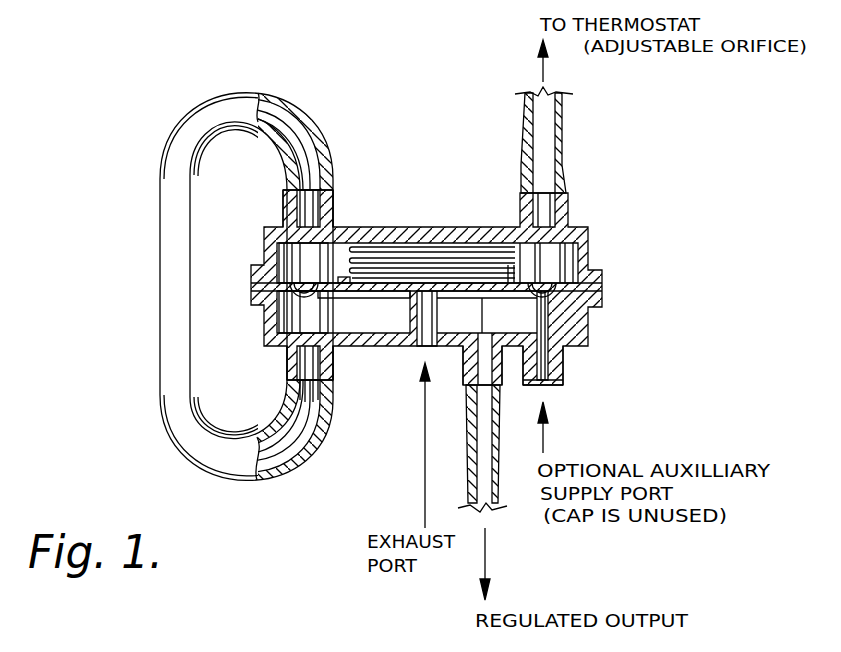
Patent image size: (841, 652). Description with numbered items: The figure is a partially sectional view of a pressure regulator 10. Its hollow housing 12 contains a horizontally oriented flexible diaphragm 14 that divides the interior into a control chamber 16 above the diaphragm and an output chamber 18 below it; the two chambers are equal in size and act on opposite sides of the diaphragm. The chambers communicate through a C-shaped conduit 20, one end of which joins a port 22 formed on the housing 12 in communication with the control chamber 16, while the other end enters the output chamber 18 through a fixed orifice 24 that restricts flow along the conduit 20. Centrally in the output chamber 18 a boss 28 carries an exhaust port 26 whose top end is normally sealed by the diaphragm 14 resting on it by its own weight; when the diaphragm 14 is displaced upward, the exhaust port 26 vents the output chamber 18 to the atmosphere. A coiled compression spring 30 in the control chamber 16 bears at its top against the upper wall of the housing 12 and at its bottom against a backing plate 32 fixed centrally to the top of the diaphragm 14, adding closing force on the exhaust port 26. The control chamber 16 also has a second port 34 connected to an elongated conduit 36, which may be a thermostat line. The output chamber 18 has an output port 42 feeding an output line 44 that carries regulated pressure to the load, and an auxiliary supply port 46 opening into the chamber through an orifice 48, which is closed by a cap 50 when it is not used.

The pressure regulator 10 is at (686, 181).
The housing 12 is at (590, 243).
The flexible diaphragm 14 is at (476, 296).
The control chamber 16 is at (288, 262).
The output chamber 18 is at (334, 318).
The C-shaped conduit 20 is at (172, 356).
The port 22 is at (306, 212).
The fixed orifice 24 is at (302, 352).
The exhaust port 26 is at (425, 347).
The boss 28 is at (411, 306).
The coiled compression spring 30 is at (380, 252).
The backing plate 32 is at (510, 283).
The second port 34 is at (548, 213).
The elongated conduit 36 is at (563, 146).
The output port 42 is at (472, 386).
The output line 44 is at (469, 457).
The auxiliary supply port 46 is at (547, 362).
The orifice 48 is at (542, 346).
The cap 50 is at (565, 387).